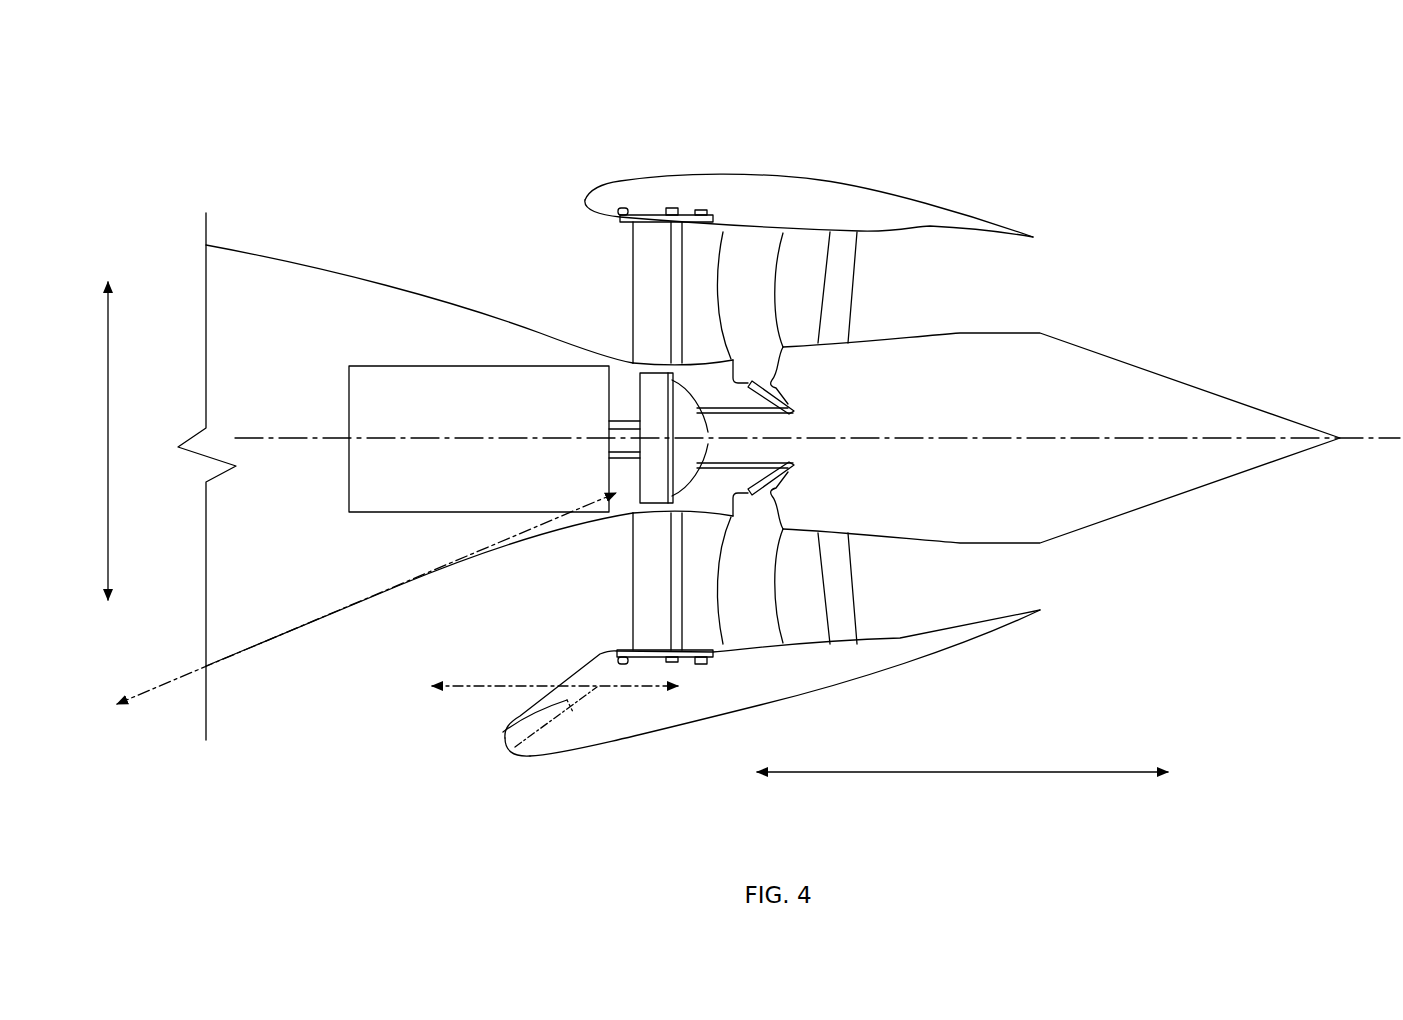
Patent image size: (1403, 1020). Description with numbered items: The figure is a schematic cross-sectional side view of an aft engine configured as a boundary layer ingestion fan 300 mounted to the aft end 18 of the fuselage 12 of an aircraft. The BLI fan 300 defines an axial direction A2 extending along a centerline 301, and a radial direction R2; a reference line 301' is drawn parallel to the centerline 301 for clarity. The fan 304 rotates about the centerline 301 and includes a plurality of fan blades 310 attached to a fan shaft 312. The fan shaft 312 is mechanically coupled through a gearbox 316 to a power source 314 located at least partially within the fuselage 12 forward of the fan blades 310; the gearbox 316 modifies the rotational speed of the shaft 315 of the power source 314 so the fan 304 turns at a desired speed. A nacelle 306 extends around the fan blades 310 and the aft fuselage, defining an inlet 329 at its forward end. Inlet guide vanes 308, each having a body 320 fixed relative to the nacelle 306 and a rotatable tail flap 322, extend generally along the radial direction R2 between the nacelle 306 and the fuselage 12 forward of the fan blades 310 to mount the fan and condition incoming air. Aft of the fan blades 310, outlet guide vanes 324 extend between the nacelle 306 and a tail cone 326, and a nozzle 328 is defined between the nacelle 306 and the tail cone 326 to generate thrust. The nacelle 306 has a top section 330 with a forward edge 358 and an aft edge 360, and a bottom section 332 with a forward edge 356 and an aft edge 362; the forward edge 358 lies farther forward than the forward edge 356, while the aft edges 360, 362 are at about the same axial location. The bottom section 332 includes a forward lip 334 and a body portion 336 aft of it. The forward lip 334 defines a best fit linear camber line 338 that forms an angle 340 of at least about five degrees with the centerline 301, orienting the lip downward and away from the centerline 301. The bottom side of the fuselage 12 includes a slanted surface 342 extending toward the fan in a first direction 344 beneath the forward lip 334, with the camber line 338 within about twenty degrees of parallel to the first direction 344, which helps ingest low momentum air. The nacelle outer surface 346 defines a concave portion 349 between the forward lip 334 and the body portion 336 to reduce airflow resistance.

The boundary layer ingestion fan 300 is at (1168, 100).
The fuselage 12 is at (285, 258).
The aft end 18 is at (336, 248).
The power source 314 is at (420, 366).
The gearbox 316 is at (633, 375).
The inlet guide vanes 308 is at (633, 253).
The body 320 is at (649, 237).
The tail flap 322 is at (680, 267).
The top section 330 is at (745, 158).
The nacelle 306 is at (802, 180).
The forward edge 358 is at (575, 204).
The fan 304 is at (764, 258).
The fan blades 310 is at (770, 276).
The fan shaft 312 is at (778, 416).
The outlet guide vanes 324 is at (847, 577).
The tail cone 326 is at (1190, 385).
The centerline 301 is at (817, 402).
The reference line 301' is at (555, 650).
The shaft 315 is at (620, 515).
The inlet 329 is at (545, 588).
The angle 340 is at (505, 732).
The forward edge 356 is at (516, 757).
The camber line 338 is at (548, 745).
The forward lip 334 is at (573, 755).
The outer surface 346 is at (627, 730).
The concave portion 349 is at (656, 727).
The bottom section 332 is at (719, 716).
The body portion 336 is at (836, 692).
The aft edge 362 is at (1046, 610).
The aft edge 360 is at (1038, 238).
The nozzle 328 is at (1066, 282).
The slanted surface 342 is at (272, 660).
The first direction 344 is at (172, 688).
The radial direction R2 is at (112, 327).
The axial direction A2 is at (998, 772).